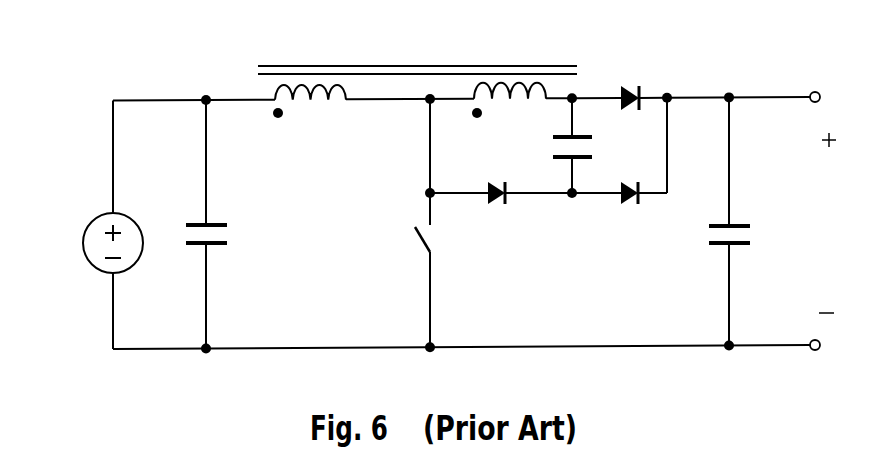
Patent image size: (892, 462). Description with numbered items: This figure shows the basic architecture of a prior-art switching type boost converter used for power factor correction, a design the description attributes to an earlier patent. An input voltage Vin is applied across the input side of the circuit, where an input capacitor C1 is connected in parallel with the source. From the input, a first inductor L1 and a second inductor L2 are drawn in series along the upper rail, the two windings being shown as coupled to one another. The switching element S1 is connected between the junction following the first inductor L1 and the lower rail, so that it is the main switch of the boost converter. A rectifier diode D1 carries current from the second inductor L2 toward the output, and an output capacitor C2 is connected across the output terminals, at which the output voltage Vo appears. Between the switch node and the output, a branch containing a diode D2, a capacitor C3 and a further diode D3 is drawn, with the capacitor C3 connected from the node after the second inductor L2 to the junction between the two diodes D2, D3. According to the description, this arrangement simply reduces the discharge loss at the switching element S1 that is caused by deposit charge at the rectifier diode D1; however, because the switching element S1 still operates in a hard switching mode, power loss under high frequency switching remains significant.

The input voltage source Vin is at (89, 243).
The input capacitor C1 is at (232, 224).
The first inductor winding (coupled inductor) L1 is at (309, 73).
The inductor L2 is at (509, 73).
The rectifier diode D1 is at (619, 69).
The diode D2 is at (495, 219).
The third diode D3 is at (632, 217).
The intermediate capacitor C3 is at (550, 145).
The switching element S1 is at (403, 270).
The output capacitor C2 is at (707, 221).
The output voltage Vo is at (829, 221).